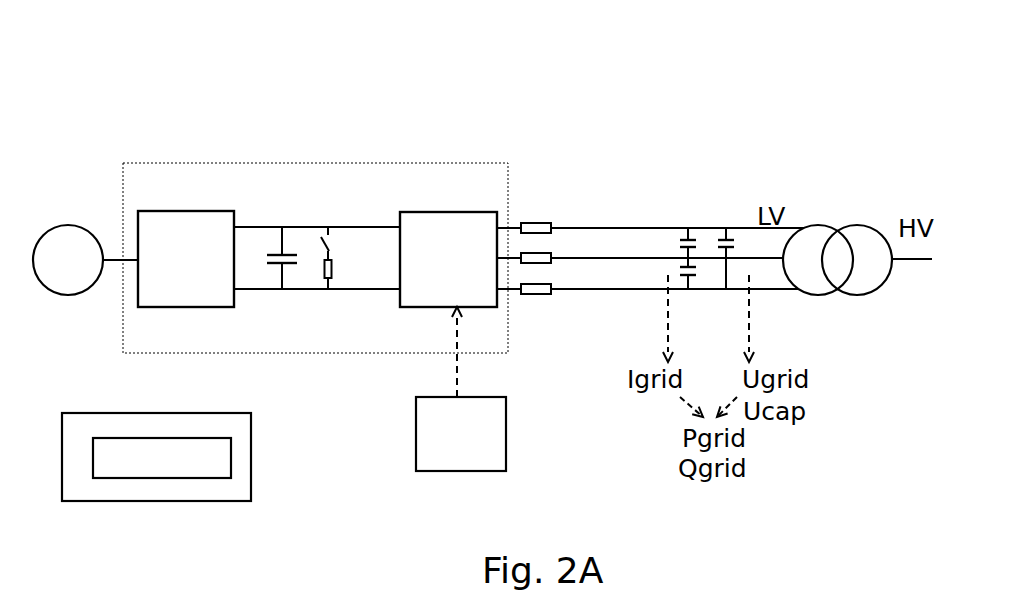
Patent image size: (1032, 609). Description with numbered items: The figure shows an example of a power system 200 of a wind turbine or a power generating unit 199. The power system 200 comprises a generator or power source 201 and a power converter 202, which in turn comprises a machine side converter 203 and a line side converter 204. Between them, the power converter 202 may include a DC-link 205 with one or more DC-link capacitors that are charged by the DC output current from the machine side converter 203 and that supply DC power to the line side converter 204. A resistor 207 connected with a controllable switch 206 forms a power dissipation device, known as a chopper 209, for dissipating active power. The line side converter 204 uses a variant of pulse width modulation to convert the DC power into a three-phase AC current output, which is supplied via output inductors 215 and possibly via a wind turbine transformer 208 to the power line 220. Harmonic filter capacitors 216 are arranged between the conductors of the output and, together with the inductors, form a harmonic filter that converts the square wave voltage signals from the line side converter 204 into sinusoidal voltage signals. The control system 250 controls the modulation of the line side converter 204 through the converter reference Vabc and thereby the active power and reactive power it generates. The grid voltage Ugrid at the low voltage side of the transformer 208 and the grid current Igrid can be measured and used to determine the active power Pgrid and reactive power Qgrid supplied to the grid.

The power generating unit 199 is at (128, 508).
The power system 200 is at (243, 52).
The generator 201 is at (58, 223).
The power converter 202 is at (318, 145).
The machine side converter 203 is at (180, 197).
The line side converter 204 is at (447, 200).
The DC-link 205 is at (275, 238).
The controllable switch 206 is at (332, 242).
The resistor 207 is at (333, 265).
The wind turbine transformer 208 is at (832, 223).
The chopper 209 is at (317, 262).
The output inductors 215 is at (532, 220).
The harmonic filter capacitors 216 is at (700, 233).
The power line 220 is at (913, 268).
The control system 250 is at (413, 435).